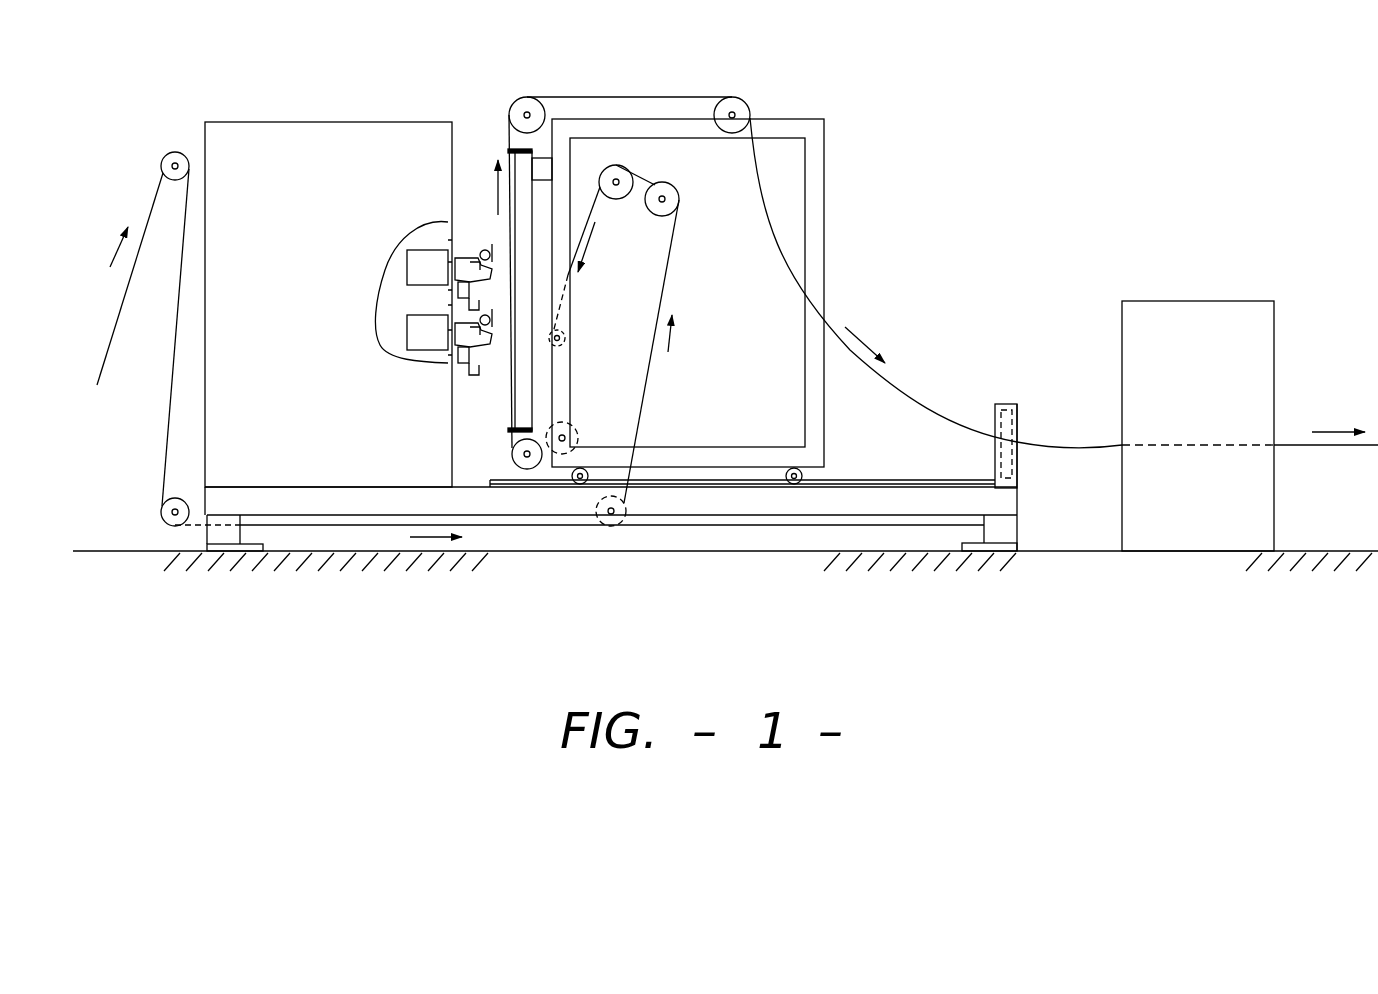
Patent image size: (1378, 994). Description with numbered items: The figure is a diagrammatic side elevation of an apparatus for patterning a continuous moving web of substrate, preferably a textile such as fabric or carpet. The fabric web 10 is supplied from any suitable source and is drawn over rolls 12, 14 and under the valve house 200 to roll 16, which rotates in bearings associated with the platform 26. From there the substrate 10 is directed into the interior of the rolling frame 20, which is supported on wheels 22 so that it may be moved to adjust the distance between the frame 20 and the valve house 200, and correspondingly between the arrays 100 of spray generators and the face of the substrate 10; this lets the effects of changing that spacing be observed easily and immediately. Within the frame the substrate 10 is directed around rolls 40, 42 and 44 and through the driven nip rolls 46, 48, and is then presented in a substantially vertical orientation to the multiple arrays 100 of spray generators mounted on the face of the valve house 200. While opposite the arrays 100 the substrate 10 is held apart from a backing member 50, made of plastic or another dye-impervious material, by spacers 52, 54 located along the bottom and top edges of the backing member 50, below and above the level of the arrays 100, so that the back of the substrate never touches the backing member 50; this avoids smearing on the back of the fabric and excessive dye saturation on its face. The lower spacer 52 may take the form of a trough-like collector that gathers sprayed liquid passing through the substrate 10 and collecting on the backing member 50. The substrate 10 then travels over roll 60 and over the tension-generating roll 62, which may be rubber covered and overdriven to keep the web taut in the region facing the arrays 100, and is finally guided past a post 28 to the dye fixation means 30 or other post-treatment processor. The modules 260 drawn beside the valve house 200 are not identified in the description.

The fabric web 10 is at (167, 421).
The roll 12 is at (171, 152).
The roll 14 is at (162, 506).
The roll 16 is at (620, 525).
The rolling frame 20 is at (824, 172).
The wheels 22 is at (583, 468).
The platform 26 is at (863, 516).
The guide post 28 is at (1018, 418).
The dye fixation means 30 is at (1192, 301).
The roll 40 is at (661, 183).
The roll 42 is at (617, 166).
The roll 44 is at (558, 330).
The driven nip roll 46 is at (570, 424).
The driven nip roll 48 is at (512, 458).
The backing member 50 is at (515, 206).
The lower spacer 52 is at (511, 431).
The spacer 54 is at (508, 149).
The roll 60 is at (527, 97).
The tension-generating roll 62 is at (735, 104).
The arrays of spray generators 100 is at (470, 243).
The valve house 200 is at (303, 121).
The dispensing modules 260 is at (427, 250).